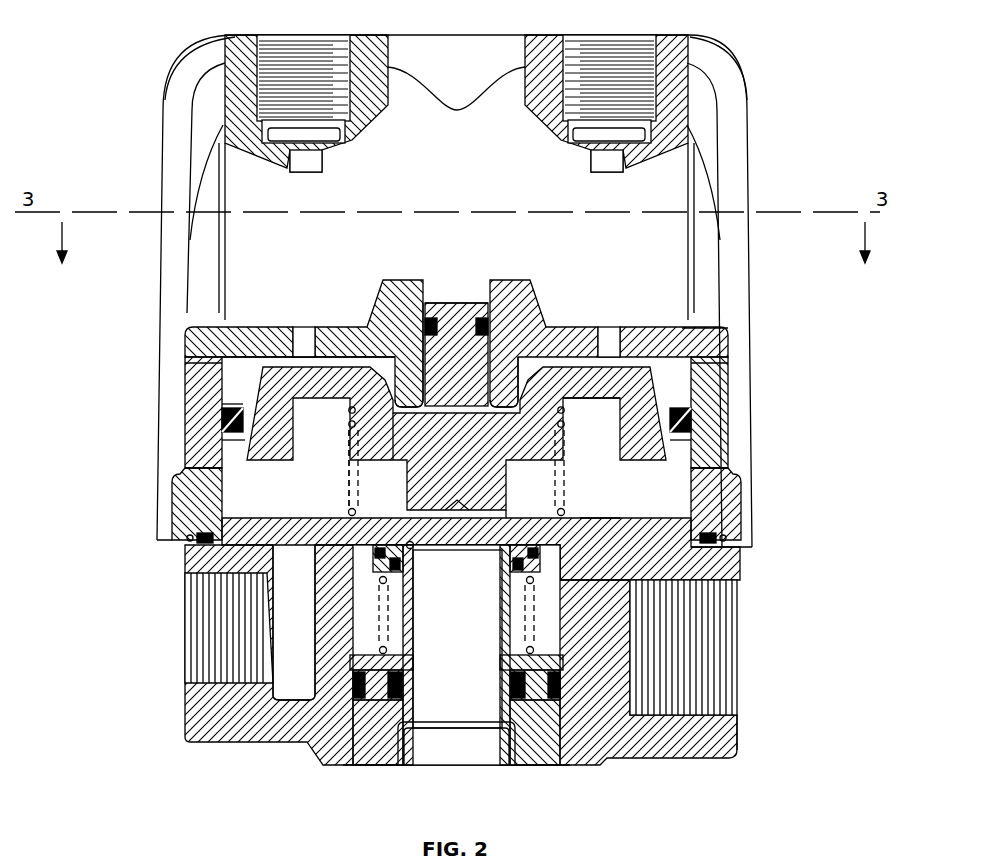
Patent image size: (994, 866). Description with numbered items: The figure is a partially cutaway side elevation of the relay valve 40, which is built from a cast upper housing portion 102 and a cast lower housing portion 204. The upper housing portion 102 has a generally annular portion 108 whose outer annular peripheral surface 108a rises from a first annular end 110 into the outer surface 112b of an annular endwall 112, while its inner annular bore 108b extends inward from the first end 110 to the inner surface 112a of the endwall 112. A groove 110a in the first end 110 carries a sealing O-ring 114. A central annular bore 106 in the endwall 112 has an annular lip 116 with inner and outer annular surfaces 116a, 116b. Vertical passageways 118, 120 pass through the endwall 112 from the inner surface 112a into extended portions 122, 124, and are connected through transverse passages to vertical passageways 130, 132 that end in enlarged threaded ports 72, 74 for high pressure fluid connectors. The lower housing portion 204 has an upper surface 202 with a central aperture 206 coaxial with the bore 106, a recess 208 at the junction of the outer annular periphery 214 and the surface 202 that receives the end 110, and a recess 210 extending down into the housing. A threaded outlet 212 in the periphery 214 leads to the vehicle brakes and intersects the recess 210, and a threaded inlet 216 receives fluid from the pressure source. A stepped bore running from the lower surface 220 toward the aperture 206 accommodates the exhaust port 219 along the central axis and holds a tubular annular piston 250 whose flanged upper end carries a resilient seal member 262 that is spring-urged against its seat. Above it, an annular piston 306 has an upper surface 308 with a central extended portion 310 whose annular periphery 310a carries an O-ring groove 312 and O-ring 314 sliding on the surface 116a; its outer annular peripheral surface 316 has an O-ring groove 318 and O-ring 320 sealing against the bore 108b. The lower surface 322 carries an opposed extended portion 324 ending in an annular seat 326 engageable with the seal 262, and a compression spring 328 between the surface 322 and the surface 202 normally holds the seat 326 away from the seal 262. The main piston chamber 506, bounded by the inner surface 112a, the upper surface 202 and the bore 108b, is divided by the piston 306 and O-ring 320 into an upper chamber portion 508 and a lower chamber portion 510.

The relay valve 40 is at (764, 74).
The port 72 is at (650, 50).
The port 74 is at (345, 48).
The upper housing portion 102 is at (748, 243).
The annular bore 106 is at (487, 286).
The annular portion 108 is at (713, 418).
The outer annular peripheral surface 108a is at (728, 447).
The inner annular bore 108b is at (690, 468).
The first annular end 110 is at (730, 557).
The groove 110a is at (723, 537).
The annular endwall 112 is at (680, 345).
The inner surface 112a is at (683, 365).
The outer surface 112b is at (682, 330).
The sealing O-ring 114 is at (703, 540).
The annular lip 116 is at (484, 393).
The inner annular surface 116a is at (484, 367).
The outer annular surface 116b is at (517, 394).
The vertical passageway 118 is at (603, 330).
The vertical passageway 120 is at (312, 333).
The extended portion 122 is at (692, 52).
The extended portion 124 is at (222, 44).
The vertical passageway 130 is at (613, 170).
The vertical passageway 132 is at (311, 166).
The upper surface 202 is at (590, 520).
The lower housing portion 204 is at (728, 750).
The aperture 206 is at (510, 520).
The recess 208 is at (183, 538).
The recess 210 is at (317, 573).
The threaded outlet 212 is at (200, 677).
The outer annular periphery 214 is at (740, 737).
The threaded inlet 216 is at (720, 717).
The exhaust port 219 is at (435, 748).
The lower surface 220 is at (667, 757).
The annular piston 250 is at (502, 628).
The resilient seal member 262 is at (413, 545).
The annular piston 306 is at (315, 388).
The upper surface 308 is at (278, 367).
The extended portion 310 is at (440, 310).
The annular periphery 310a is at (422, 348).
The O-ring groove 312 is at (480, 372).
The resilient O-ring 314 is at (423, 326).
The outer annular peripheral surface 316 is at (220, 404).
The O-ring groove 318 is at (230, 445).
The resilient O-ring 320 is at (218, 421).
The lower surface 322 is at (592, 400).
The extended portion 324 is at (455, 502).
The annular seat 326 is at (398, 520).
The compression spring 328 is at (350, 512).
The main piston chamber 506 is at (690, 472).
The upper chamber portion 508 is at (672, 380).
The lower chamber portion 510 is at (672, 500).